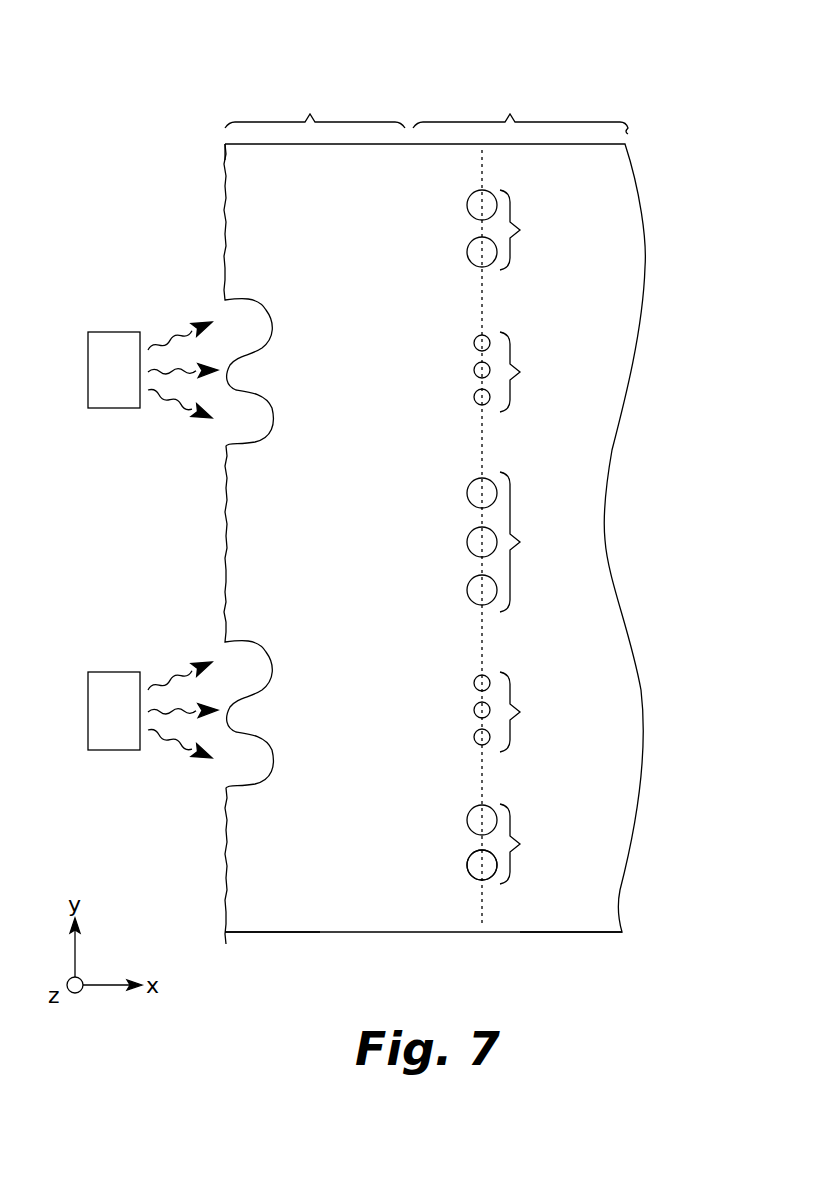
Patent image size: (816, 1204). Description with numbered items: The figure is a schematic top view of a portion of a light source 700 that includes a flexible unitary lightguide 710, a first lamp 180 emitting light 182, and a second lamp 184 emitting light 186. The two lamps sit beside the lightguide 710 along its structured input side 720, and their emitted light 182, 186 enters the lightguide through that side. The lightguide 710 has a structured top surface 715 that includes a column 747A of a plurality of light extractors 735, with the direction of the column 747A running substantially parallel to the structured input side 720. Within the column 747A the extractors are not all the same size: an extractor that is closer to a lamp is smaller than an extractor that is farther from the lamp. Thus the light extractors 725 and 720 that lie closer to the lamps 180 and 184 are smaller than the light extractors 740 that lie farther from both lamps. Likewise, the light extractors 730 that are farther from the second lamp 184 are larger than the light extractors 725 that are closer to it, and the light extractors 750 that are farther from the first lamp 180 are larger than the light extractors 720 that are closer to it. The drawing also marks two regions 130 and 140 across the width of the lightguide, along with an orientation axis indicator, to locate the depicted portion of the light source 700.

The light source 700 is at (585, 44).
The first region 130 is at (520, 112).
The second region 140 is at (315, 109).
The first lamp 180 is at (113, 682).
The light 182 is at (172, 738).
The second lamp 184 is at (113, 342).
The light 186 is at (172, 398).
The flexible unitary lightguide 710 is at (302, 934).
The structured top surface 715 is at (540, 920).
The structured input side 720 is at (228, 173).
The light extractors 725 is at (523, 372).
The light extractors 730 is at (520, 230).
The light extractor 735 is at (462, 900).
The light extractors 740 is at (520, 542).
The column of light extractors 747A is at (482, 305).
The light extractors 750 is at (520, 844).